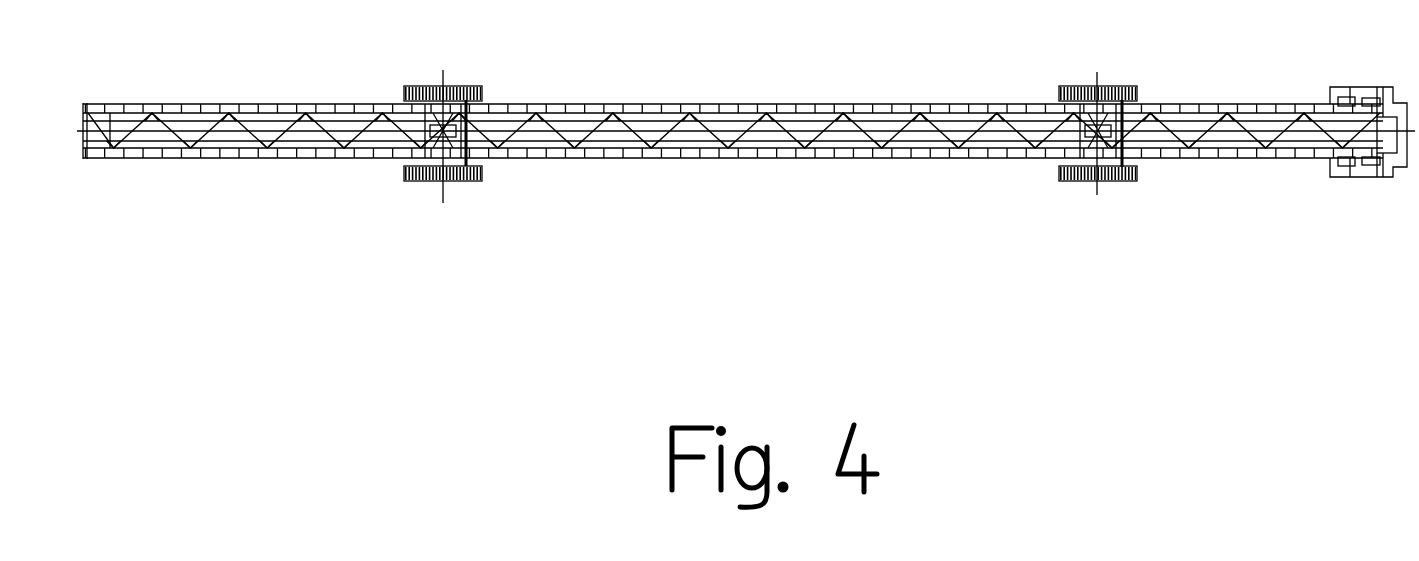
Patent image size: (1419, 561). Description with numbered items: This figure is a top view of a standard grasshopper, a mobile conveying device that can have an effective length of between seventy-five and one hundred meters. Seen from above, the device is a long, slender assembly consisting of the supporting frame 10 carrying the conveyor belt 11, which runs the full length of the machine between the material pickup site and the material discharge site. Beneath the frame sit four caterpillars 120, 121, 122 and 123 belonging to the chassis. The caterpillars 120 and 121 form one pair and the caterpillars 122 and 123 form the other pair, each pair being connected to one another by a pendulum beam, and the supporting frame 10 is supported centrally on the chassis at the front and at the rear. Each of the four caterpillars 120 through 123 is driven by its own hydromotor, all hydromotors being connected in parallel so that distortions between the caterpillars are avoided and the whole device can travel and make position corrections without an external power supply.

The supporting frame 10 is at (772, 104).
The conveyor belt 11 is at (601, 104).
The caterpillar 120 is at (405, 85).
The caterpillar 121 is at (405, 181).
The caterpillar 122 is at (1060, 86).
The caterpillar 123 is at (1060, 181).